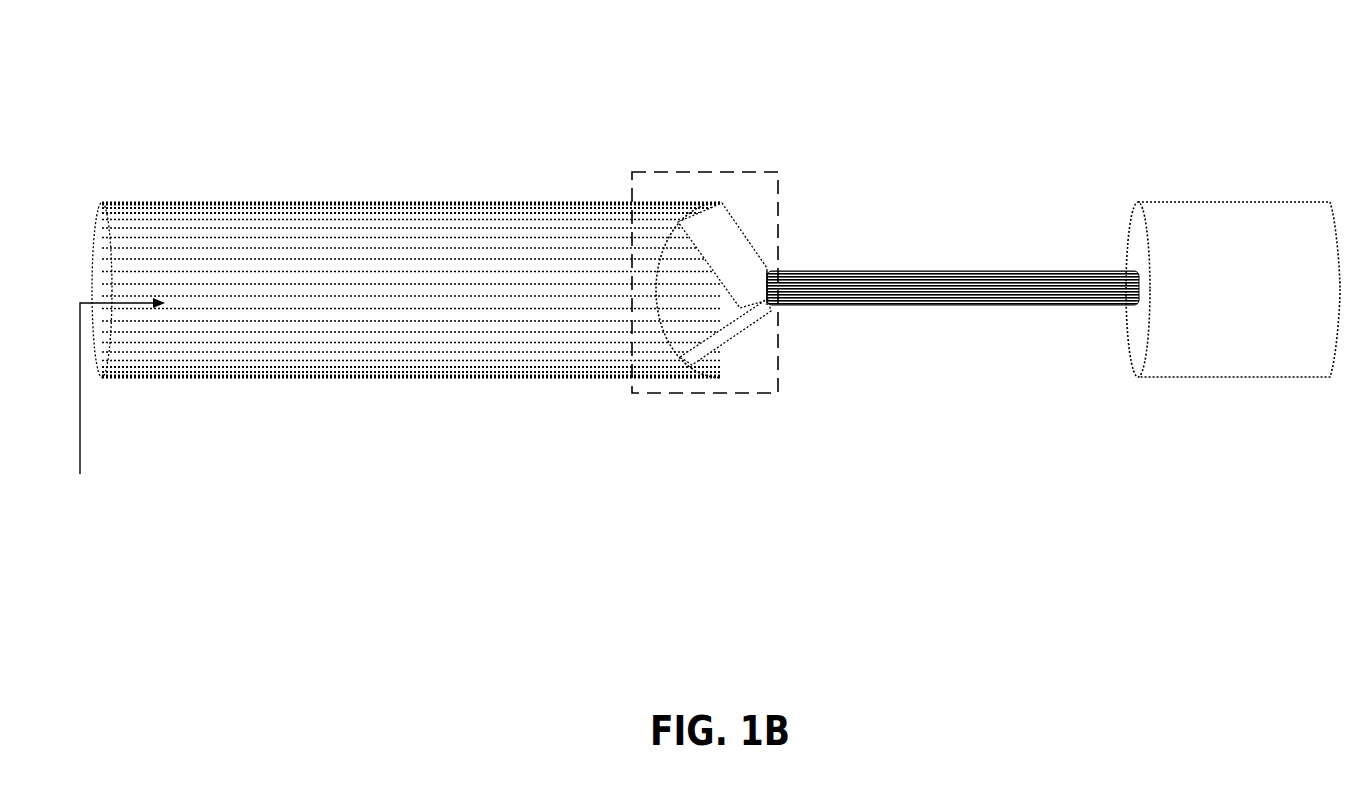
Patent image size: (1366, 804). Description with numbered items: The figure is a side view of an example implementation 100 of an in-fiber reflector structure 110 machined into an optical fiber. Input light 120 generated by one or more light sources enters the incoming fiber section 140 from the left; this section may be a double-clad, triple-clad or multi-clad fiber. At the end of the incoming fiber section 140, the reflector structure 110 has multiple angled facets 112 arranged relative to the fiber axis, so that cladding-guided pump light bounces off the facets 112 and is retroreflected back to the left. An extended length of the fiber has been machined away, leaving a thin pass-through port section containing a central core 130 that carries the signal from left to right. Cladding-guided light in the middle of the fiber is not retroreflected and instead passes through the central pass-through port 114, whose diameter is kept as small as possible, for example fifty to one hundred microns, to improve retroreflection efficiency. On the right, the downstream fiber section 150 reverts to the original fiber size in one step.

The example implementation 100 is at (203, 59).
The in-fiber reflector structure 110 is at (706, 172).
The facets 112 is at (758, 250).
The central pass-through port 114 is at (778, 300).
The input light 120 is at (114, 403).
The central core 130 is at (963, 270).
The incoming fiber section 140 is at (425, 203).
The downstream fiber section 150 is at (1236, 200).